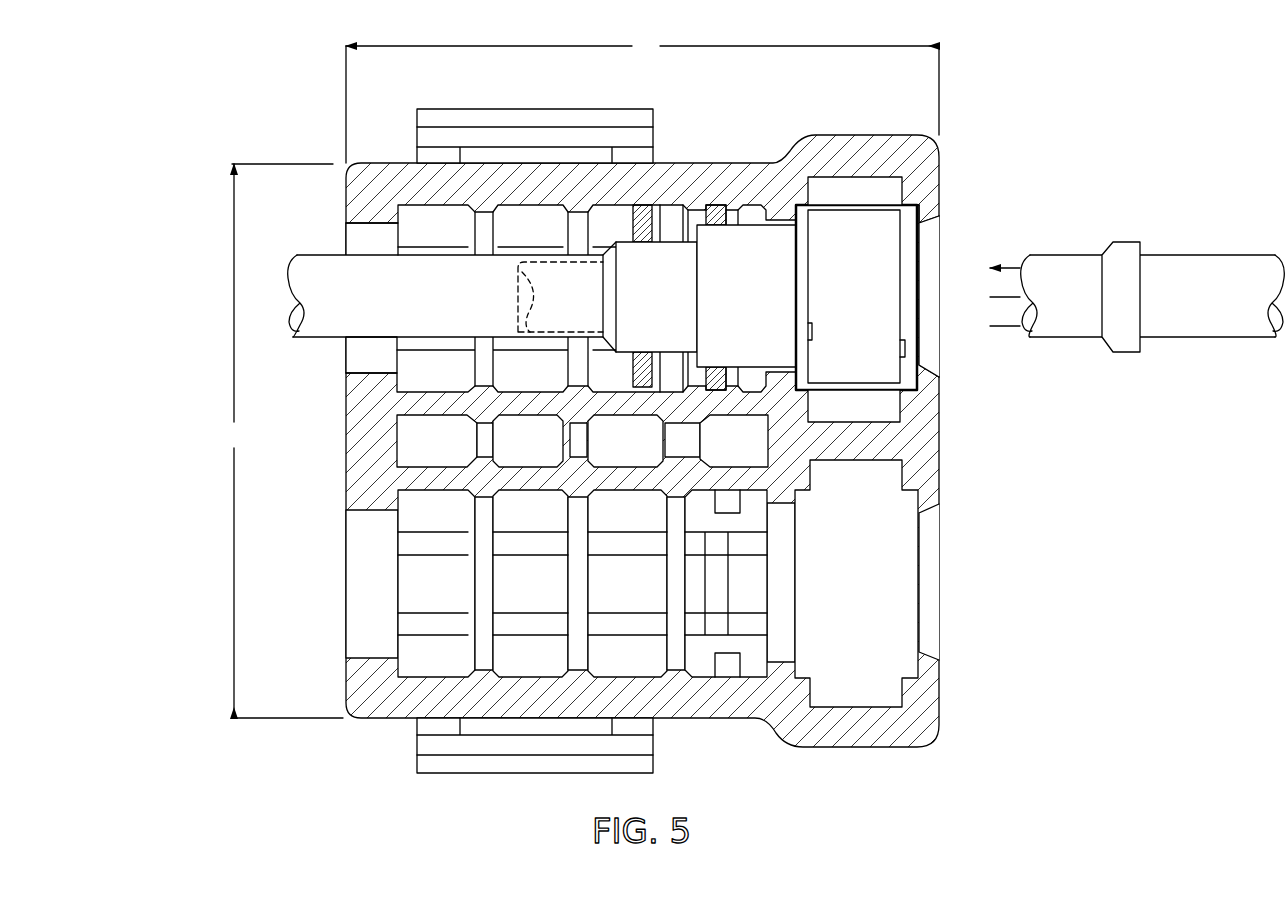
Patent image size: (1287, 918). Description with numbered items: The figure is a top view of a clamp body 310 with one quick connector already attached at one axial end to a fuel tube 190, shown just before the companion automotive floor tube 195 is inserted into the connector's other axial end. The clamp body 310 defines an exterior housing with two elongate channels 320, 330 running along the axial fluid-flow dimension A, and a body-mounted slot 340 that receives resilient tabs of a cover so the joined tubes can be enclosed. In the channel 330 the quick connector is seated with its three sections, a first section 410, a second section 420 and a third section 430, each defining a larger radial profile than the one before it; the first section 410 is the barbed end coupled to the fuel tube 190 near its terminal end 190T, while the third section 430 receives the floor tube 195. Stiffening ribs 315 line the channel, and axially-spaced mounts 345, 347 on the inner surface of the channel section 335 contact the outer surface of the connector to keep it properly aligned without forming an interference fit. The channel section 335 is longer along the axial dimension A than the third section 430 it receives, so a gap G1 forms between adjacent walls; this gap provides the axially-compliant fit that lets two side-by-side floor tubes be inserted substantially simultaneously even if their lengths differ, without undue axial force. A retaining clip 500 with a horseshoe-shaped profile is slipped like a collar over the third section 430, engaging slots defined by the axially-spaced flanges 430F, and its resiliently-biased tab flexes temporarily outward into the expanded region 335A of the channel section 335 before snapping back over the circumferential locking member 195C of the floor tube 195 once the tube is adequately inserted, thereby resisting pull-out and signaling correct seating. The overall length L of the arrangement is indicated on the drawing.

The clamp body 310 is at (800, 143).
The stiffening ribs 315 is at (585, 243).
The channel 320 is at (355, 553).
The channel 330 is at (353, 242).
The channel section 335 is at (886, 390).
The expanded region 335A is at (848, 185).
The body-mounted slot 340 is at (490, 115).
The axially-spaced mount 345 is at (643, 205).
The axially-spaced mount 347 is at (715, 210).
The first section 410 is at (518, 277).
The second section 420 is at (656, 297).
The third section 430 is at (747, 296).
The flanges 430F is at (797, 232).
The retaining clip 500 is at (856, 297).
The fuel tube 190 is at (335, 328).
The terminal end 190T is at (607, 337).
The floor tube 195 is at (1068, 327).
The circumferential locking member 195C is at (1125, 252).
The gap G1 is at (922, 213).
The axial dimension A is at (642, 98).
The length dimension L is at (285, 441).